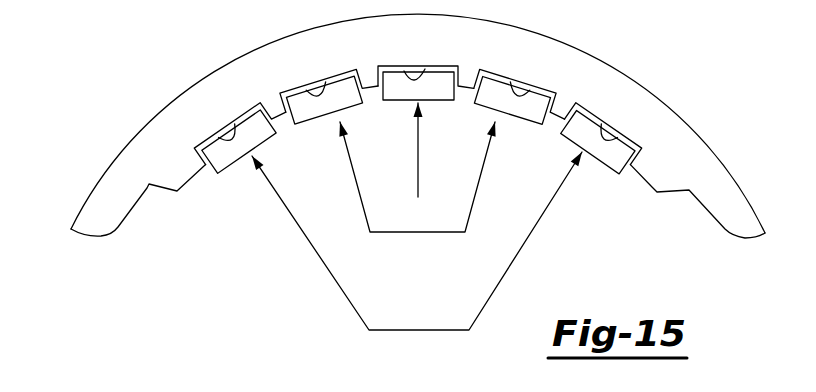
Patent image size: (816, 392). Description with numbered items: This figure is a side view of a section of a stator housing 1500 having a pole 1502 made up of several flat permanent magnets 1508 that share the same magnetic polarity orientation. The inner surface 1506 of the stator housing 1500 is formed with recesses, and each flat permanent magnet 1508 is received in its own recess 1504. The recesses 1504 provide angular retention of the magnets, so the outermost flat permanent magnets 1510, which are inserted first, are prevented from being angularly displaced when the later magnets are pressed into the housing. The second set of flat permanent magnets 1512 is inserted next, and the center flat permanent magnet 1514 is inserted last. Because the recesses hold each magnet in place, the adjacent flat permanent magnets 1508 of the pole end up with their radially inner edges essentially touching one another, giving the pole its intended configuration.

The stator housing 1500 is at (113, 162).
The pole 1502 is at (243, 256).
The recess 1504 is at (218, 138).
The inner surface 1506 is at (652, 188).
The flat permanent magnet 1508 is at (218, 172).
The outermost flat permanent magnets 1510 is at (415, 332).
The second set of flat permanent magnets 1512 is at (417, 233).
The center flat permanent magnet 1514 is at (416, 163).